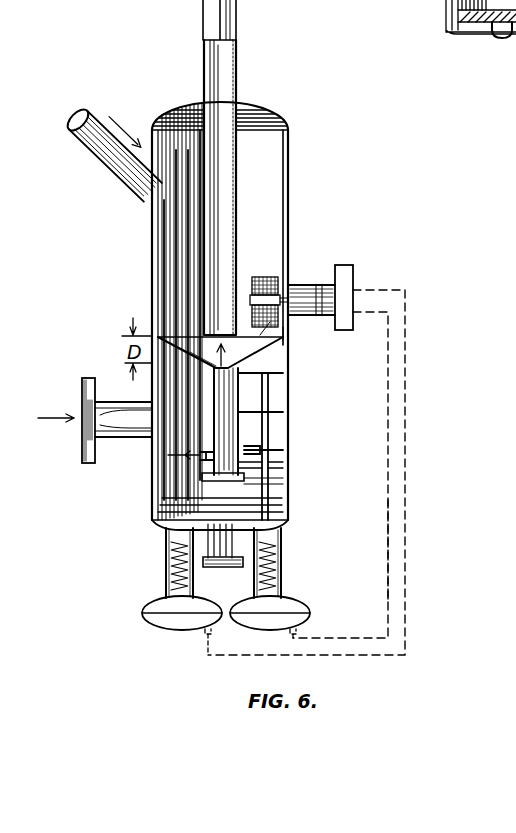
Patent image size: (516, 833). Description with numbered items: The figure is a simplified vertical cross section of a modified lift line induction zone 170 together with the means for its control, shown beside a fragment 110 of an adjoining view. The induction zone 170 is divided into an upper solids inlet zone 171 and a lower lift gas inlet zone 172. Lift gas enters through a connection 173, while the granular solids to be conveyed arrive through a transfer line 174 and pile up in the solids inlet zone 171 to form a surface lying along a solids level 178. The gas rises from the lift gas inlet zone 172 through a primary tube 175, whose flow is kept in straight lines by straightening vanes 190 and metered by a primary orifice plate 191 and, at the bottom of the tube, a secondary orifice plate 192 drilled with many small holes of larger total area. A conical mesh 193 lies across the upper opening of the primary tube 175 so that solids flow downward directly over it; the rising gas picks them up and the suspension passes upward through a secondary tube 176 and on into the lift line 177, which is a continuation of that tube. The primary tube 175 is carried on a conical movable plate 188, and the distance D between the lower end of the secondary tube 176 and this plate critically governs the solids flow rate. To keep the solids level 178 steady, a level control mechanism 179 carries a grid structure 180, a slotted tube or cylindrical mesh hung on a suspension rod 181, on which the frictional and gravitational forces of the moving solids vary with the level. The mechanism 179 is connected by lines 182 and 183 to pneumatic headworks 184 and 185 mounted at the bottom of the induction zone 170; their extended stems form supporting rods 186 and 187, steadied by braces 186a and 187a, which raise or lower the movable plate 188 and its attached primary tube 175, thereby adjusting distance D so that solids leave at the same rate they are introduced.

The fragment of adjacent figure 110 is at (446, 8).
The induction zone 170 is at (152, 268).
The solids inlet zone 171 is at (272, 172).
The lift gas inlet zone 172 is at (280, 456).
The connection 173 is at (128, 440).
The transfer line 174 is at (104, 170).
The primary tube 175 is at (250, 444).
The secondary tube 176 is at (238, 143).
The lift line 177 is at (205, 27).
The solids level 178 is at (158, 224).
The level control mechanism 179 is at (346, 278).
The grid structure 180 is at (262, 278).
The suspension rod 181 is at (293, 285).
The line 182 is at (390, 312).
The line 183 is at (405, 538).
The pneumatic headworks 184 is at (294, 606).
The pneumatic headworks 185 is at (162, 603).
The supporting rod 186 is at (266, 498).
The brace 186a is at (272, 468).
The supporting rod 187 is at (160, 513).
The brace 187a is at (168, 455).
The movable plate 188 is at (275, 338).
The straightening vanes 190 is at (284, 412).
The primary orifice plate 191 is at (258, 465).
The secondary orifice plate 192 is at (222, 478).
The mesh 193 is at (284, 373).